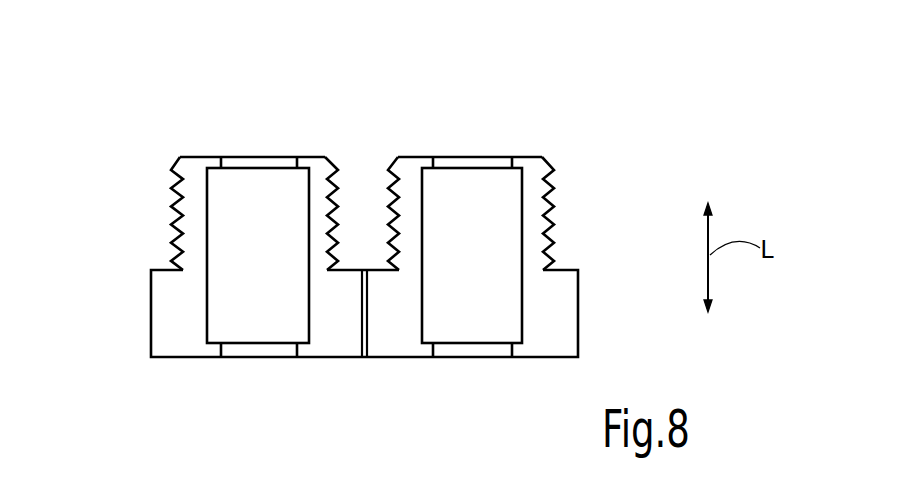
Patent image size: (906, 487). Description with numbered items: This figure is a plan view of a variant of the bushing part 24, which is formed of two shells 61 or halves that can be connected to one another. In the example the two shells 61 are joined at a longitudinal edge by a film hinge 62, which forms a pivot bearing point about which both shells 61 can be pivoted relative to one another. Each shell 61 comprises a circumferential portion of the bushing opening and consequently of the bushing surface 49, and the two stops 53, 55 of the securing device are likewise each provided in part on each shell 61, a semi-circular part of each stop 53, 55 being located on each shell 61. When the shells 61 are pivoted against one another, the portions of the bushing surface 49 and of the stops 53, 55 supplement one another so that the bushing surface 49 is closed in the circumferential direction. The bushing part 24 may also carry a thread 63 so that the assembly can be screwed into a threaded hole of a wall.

The bushing part 24 is at (590, 157).
The shell 61 is at (178, 342).
The thread 63 is at (178, 180).
The stop 53 is at (302, 158).
The stop 55 is at (298, 350).
The bushing surface 49 is at (467, 248).
The film hinge 62 is at (369, 303).